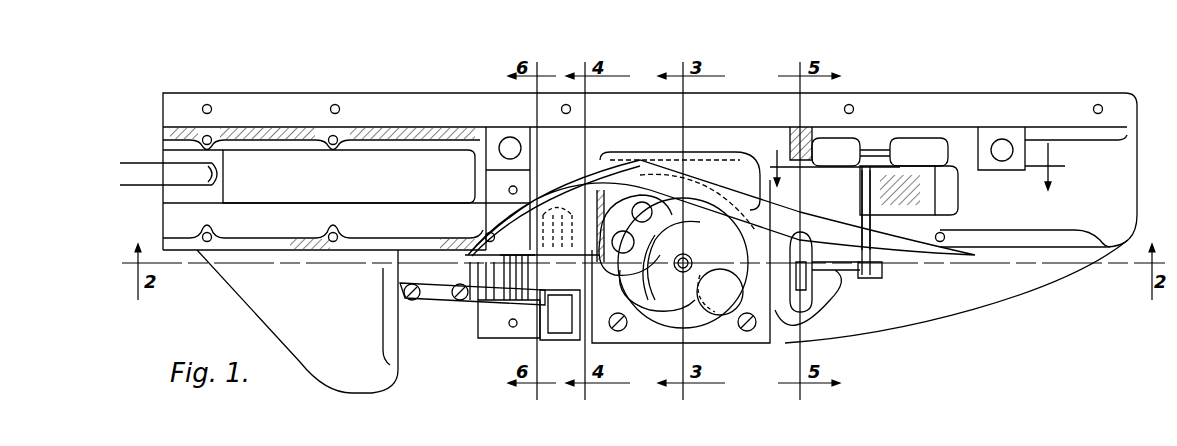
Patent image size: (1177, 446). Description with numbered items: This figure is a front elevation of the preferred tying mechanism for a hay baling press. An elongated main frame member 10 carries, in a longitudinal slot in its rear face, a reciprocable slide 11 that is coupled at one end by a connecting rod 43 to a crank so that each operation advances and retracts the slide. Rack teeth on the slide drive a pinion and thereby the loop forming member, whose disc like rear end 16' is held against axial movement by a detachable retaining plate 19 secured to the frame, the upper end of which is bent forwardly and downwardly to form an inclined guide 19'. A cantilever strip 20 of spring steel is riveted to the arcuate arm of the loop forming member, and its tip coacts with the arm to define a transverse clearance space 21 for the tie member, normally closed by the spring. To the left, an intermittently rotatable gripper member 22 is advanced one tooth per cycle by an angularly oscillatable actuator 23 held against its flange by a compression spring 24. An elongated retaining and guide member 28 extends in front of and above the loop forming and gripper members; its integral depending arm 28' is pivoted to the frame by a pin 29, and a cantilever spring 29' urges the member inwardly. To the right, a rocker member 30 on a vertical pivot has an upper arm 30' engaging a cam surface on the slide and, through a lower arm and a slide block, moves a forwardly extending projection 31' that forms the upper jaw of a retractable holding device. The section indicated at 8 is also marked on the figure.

The main frame member 10 is at (410, 108).
The reciprocable slide 11 is at (579, 200).
The connecting rod 43 is at (145, 176).
The section arrow 8 is at (912, 166).
The detachable retaining plate 19 is at (690, 154).
The inclined guide 19' is at (682, 164).
The retaining and guide member 28 is at (721, 211).
The gripper member 22 is at (557, 224).
The actuator 23 is at (517, 265).
The compression spring 24 is at (532, 265).
The cantilever strip 20 is at (638, 217).
The transverse clearance space 21 is at (636, 212).
The disc like rear end 16' is at (681, 261).
The cantilever spring 29' is at (472, 312).
The pin 29 is at (506, 330).
The depending arm 28' is at (560, 329).
The arm 30' is at (836, 153).
The rocker member 30 is at (835, 222).
The forwardly extending projection 31' is at (806, 263).